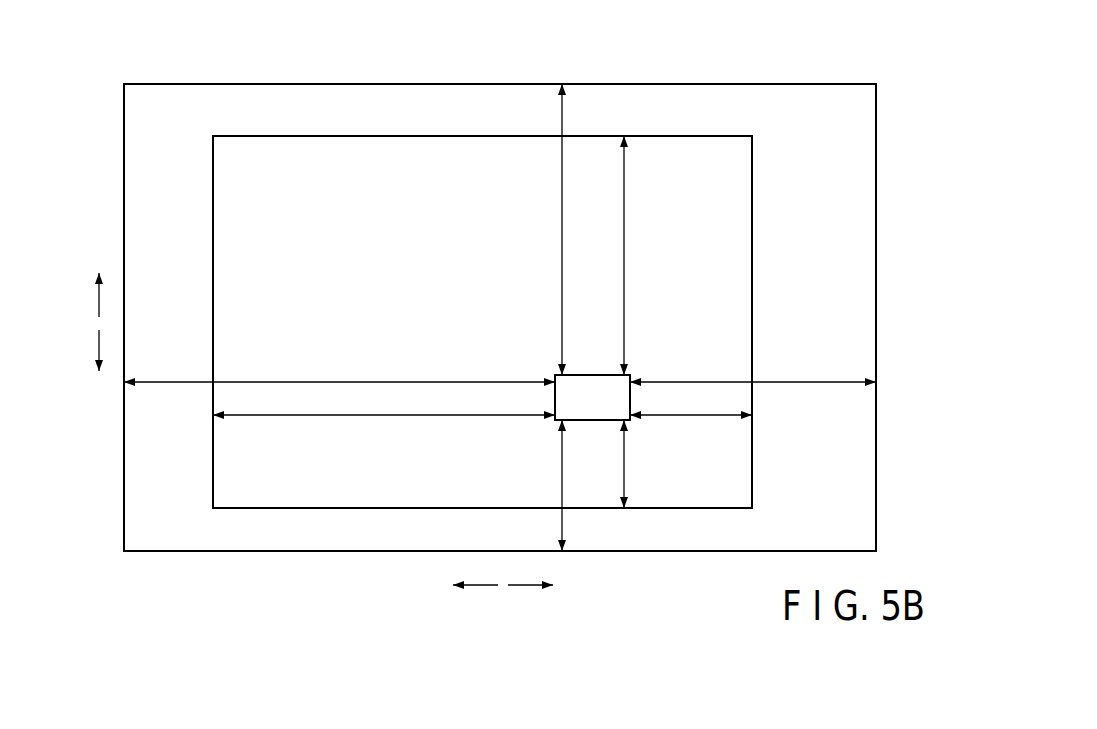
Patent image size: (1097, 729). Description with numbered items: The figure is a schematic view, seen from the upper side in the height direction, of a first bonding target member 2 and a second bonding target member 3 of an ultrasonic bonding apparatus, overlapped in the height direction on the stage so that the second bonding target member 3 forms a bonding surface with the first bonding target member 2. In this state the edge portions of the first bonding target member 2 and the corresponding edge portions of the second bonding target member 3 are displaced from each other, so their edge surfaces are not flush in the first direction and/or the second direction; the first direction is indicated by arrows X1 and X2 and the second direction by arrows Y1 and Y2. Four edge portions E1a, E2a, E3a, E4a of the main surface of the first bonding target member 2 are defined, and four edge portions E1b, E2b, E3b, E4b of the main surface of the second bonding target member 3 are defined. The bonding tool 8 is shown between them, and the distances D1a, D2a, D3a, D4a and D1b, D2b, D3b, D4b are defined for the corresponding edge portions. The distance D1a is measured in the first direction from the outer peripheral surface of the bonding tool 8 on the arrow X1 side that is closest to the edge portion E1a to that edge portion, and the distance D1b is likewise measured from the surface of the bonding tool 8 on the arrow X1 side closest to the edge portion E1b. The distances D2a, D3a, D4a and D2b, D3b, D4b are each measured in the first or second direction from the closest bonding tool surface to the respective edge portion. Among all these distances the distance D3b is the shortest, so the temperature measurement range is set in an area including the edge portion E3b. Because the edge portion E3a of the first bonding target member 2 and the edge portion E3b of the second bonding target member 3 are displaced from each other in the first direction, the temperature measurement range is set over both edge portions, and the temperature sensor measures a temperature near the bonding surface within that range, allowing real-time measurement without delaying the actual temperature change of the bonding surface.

The first bonding target member 2 is at (876, 166).
The second bonding target member 3 is at (752, 197).
The bonding tool 8 is at (628, 380).
The edge portion E1a is at (640, 84).
The edge portion E1b is at (585, 136).
The edge portion E2a is at (124, 153).
The edge portion E2b is at (213, 328).
The edge portion E3a is at (232, 551).
The edge portion E3b is at (400, 508).
The edge portion E4a is at (876, 327).
The edge portion E4b is at (752, 327).
The distance D1a is at (538, 229).
The distance D1b is at (600, 255).
The distance D2a is at (339, 369).
The distance D2b is at (384, 402).
The distance D3a is at (538, 485).
The distance D3b is at (602, 464).
The distance D4a is at (753, 368).
The distance D4b is at (691, 403).
The arrow X1 is at (79, 295).
The arrow X2 is at (79, 350).
The arrow Y1 is at (475, 604).
The arrow Y2 is at (530, 604).